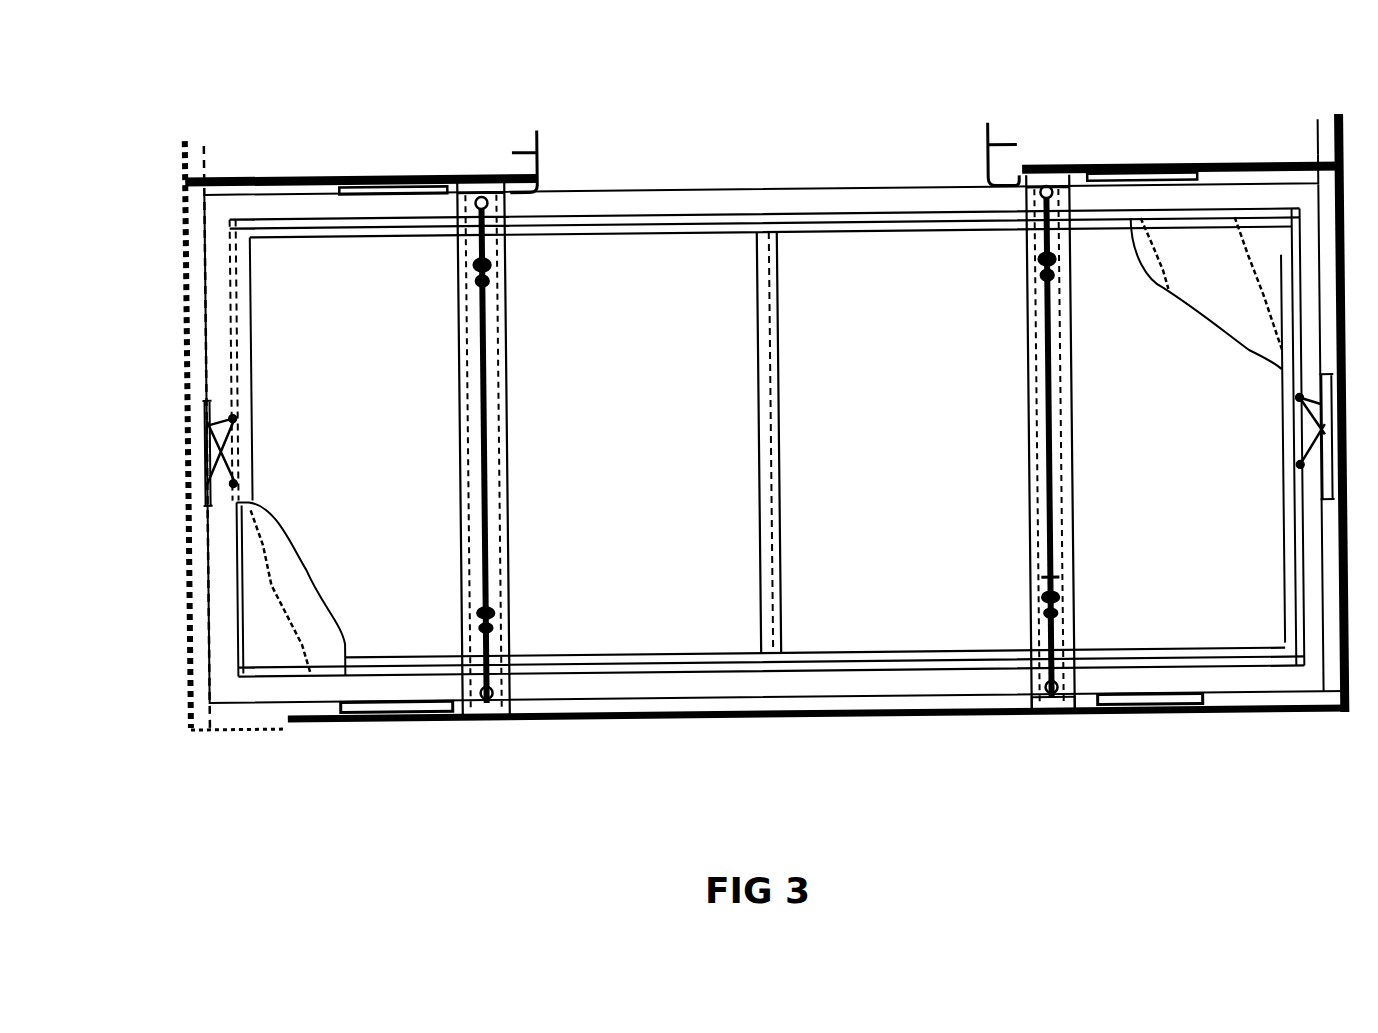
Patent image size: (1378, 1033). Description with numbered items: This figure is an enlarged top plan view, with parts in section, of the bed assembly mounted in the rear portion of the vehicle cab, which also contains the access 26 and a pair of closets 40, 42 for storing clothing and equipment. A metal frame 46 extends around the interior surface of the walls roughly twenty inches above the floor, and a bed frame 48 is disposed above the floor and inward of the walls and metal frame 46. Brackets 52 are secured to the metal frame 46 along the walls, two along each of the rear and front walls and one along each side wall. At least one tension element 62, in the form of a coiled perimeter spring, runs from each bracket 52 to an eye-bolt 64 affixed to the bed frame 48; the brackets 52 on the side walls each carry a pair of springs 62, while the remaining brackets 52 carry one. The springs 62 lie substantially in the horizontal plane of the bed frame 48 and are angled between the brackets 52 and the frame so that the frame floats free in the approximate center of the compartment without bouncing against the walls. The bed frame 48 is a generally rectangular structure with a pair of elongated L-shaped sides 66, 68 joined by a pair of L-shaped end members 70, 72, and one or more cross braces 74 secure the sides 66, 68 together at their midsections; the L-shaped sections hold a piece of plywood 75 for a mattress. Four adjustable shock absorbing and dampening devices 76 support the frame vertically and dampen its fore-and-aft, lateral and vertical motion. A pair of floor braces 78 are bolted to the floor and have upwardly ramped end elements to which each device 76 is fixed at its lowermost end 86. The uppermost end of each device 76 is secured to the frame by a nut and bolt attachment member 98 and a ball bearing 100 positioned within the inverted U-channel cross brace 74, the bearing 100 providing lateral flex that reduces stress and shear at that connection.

The access 26 is at (697, 168).
The closet 40 is at (541, 150).
The closet 42 is at (991, 147).
The metal frame 46 is at (280, 171).
The bed frame 48 is at (612, 212).
The bracket 52 is at (410, 173).
The tension element 62 is at (338, 214).
The eye-bolt 64 is at (338, 214).
The side 66 is at (688, 233).
The side 68 is at (866, 233).
The end member 70 is at (1292, 540).
The end member 72 is at (255, 352).
The cross brace 74 is at (495, 340).
The plywood 75 is at (296, 600).
The adjustable shock absorbing and dampening device 76 is at (496, 252).
The floor brace 78 is at (505, 488).
The lowermost end 86 is at (1040, 712).
The nut and bolt attachment member 98 is at (1055, 600).
The ball bearing 100 is at (1040, 580).